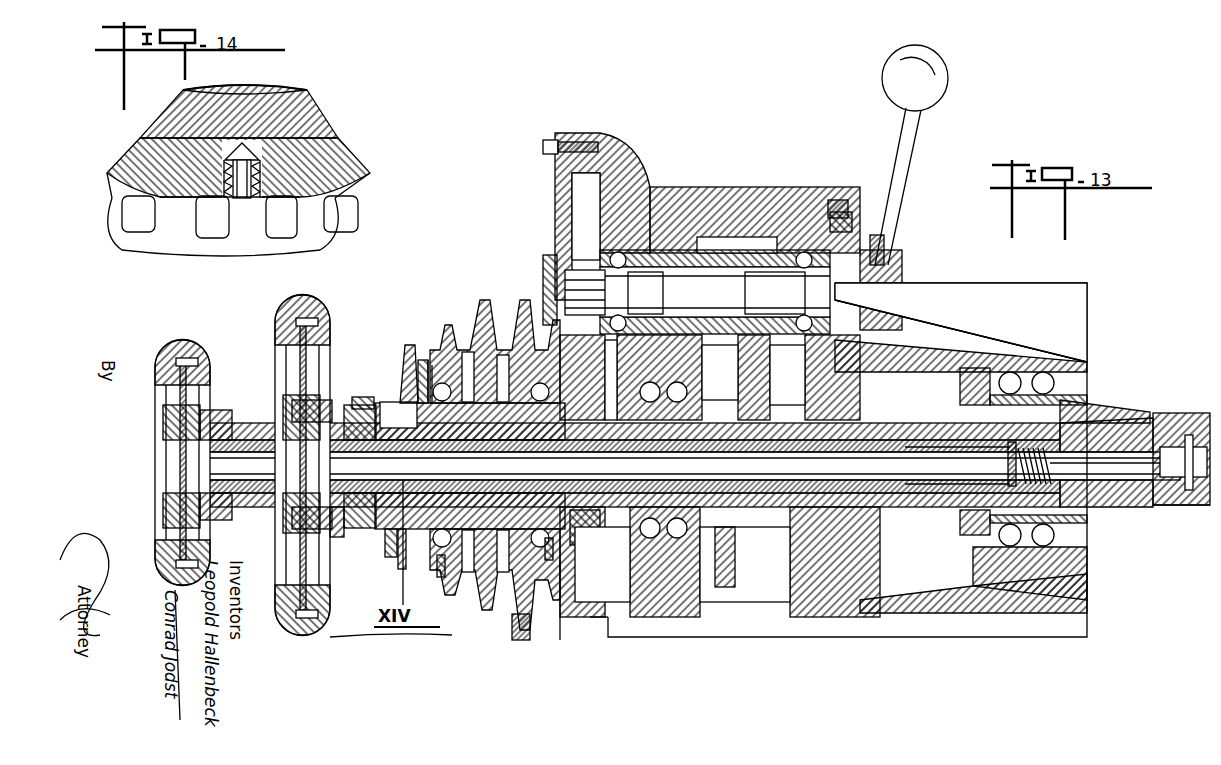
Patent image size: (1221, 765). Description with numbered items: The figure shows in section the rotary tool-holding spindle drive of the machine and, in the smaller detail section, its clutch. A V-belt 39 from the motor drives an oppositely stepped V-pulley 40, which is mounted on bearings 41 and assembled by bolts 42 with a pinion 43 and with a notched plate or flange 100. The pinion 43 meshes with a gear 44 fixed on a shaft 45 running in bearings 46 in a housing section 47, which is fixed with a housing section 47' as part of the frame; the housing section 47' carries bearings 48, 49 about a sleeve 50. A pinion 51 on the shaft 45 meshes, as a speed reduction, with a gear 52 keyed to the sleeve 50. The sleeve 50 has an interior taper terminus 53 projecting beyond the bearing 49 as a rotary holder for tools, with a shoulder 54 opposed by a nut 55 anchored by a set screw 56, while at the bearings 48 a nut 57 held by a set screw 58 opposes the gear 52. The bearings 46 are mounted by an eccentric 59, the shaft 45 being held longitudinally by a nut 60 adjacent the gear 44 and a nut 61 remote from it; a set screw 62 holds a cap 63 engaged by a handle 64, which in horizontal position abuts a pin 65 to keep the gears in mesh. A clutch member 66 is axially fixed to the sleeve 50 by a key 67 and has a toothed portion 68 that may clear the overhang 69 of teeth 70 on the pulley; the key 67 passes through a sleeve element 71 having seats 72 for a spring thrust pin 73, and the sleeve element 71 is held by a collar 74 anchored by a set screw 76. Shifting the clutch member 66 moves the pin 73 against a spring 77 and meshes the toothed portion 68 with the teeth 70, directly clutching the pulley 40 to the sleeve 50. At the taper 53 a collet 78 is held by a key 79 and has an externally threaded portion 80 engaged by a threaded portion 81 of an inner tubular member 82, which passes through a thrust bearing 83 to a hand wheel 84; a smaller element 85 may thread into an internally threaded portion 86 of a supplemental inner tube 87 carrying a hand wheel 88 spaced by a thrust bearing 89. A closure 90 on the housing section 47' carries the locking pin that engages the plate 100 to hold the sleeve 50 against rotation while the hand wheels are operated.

In FIG. 13, the V-belt 39 is at (522, 640).
In FIG. 14, the stepped V-pulley 40 is at (140, 248).
In FIG. 13, the stepped V-pulley 40 is at (488, 614).
In FIG. 13, the bearings 41 is at (492, 563).
In FIG. 13, the bolts 42 is at (545, 282).
In FIG. 13, the pinion 43 is at (587, 533).
In FIG. 13, the gear 44 is at (560, 204).
In FIG. 13, the shaft 45 is at (572, 232).
In FIG. 13, the bearings 46 is at (716, 293).
In FIG. 13, the housing section 47 is at (823, 396).
In FIG. 13, the housing section 47' is at (754, 593).
In FIG. 13, the bearings 48 is at (720, 372).
In FIG. 13, the bearings 49 is at (975, 553).
In FIG. 14, the sleeve 50 is at (184, 90).
In FIG. 13, the sleeve 50 is at (908, 372).
In FIG. 13, the pinion 51 is at (740, 270).
In FIG. 13, the gear 52 is at (772, 380).
In FIG. 13, the interior taper terminus 53 is at (1120, 418).
In FIG. 13, the shoulder 54 is at (1095, 400).
In FIG. 13, the nut 55 is at (960, 518).
In FIG. 13, the set screw 56 is at (962, 376).
In FIG. 13, the nut 57 is at (611, 380).
In FIG. 13, the set screw 58 is at (602, 564).
In FIG. 13, the eccentric 59 is at (752, 190).
In FIG. 13, the nut 60 is at (588, 292).
In FIG. 13, the nut 61 is at (884, 250).
In FIG. 13, the set screw 62 is at (852, 222).
In FIG. 13, the cap 63 is at (902, 270).
In FIG. 13, the handle 64 is at (910, 158).
In FIG. 13, the pin 65 is at (868, 195).
In FIG. 14, the clutch member 66 is at (340, 152).
In FIG. 13, the clutch member 66 is at (387, 540).
In FIG. 13, the key 67 is at (402, 402).
In FIG. 14, the toothed portion 68 is at (352, 212).
In FIG. 13, the toothed portion 68 is at (424, 360).
In FIG. 13, the overhang 69 is at (428, 360).
In FIG. 14, the teeth 70 is at (318, 230).
In FIG. 13, the teeth 70 is at (400, 402).
In FIG. 14, the sleeve element 71 is at (318, 118).
In FIG. 13, the sleeve element 71 is at (512, 452).
In FIG. 14, the seats 72 is at (224, 190).
In FIG. 13, the seats 72 is at (465, 452).
In FIG. 14, the spring thrust pin 73 is at (240, 200).
In FIG. 13, the spring thrust pin 73 is at (400, 545).
In FIG. 13, the collar 74 is at (338, 530).
In FIG. 13, the set screw 76 is at (366, 398).
In FIG. 14, the spring 77 is at (262, 192).
In FIG. 13, the collet 78 is at (1180, 413).
In FIG. 13, the key 79 is at (1006, 450).
In FIG. 13, the externally threaded portion 80 is at (945, 452).
In FIG. 13, the threaded portion 81 is at (1040, 468).
In FIG. 13, the inner tubular member 82 is at (268, 495).
In FIG. 13, the thrust bearing 83 is at (298, 522).
In FIG. 13, the hand wheel 84 is at (302, 637).
In FIG. 13, the minor element 85 is at (1160, 505).
In FIG. 13, the internally threaded portion 86 is at (1018, 466).
In FIG. 13, the supplemental inner tube 87 is at (165, 462).
In FIG. 13, the hand wheel 88 is at (158, 500).
In FIG. 13, the thrust bearing 89 is at (218, 430).
In FIG. 13, the closure 90 is at (572, 618).
In FIG. 13, the plate 100 is at (556, 565).